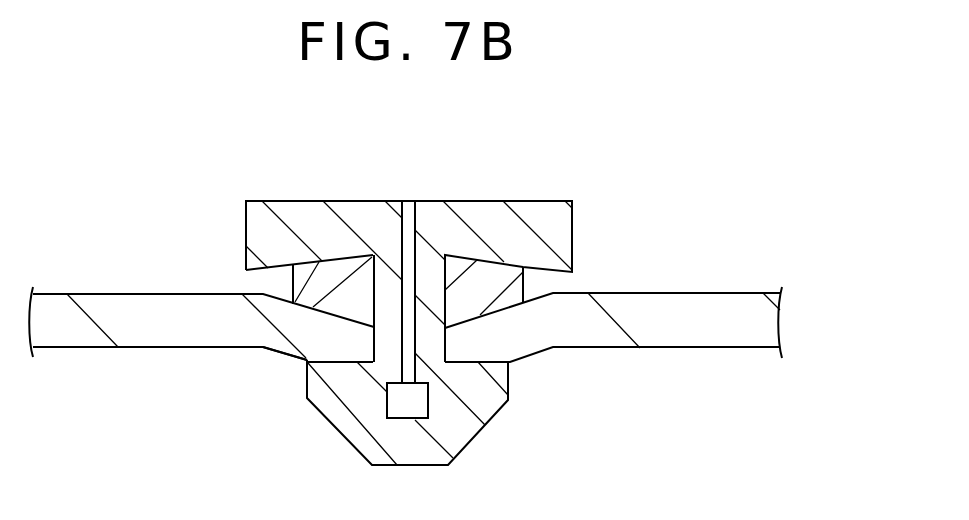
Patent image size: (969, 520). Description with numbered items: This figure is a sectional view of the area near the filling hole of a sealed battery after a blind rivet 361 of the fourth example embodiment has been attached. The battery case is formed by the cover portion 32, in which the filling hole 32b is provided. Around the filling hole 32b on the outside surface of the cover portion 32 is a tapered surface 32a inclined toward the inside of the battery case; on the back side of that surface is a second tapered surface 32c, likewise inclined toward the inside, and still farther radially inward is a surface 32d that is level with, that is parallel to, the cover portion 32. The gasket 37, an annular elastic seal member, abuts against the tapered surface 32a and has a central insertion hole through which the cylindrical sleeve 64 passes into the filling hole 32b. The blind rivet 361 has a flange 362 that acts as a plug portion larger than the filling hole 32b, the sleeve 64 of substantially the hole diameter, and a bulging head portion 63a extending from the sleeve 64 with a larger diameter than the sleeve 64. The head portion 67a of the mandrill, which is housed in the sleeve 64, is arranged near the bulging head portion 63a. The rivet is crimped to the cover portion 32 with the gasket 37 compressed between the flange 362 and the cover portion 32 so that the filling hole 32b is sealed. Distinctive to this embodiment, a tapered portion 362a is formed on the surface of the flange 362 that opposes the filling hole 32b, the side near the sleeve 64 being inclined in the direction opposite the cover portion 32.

The blind rivet 361 is at (230, 142).
The flange 362 is at (497, 228).
The tapered portion 362a is at (552, 273).
The sleeve 64 is at (355, 303).
The head portion 67a is at (402, 402).
The cover portion 32 is at (202, 327).
The tapered surface 32a is at (272, 291).
The filling hole 32b is at (375, 378).
The tapered surface 32c is at (303, 353).
The surface 32d is at (372, 360).
The gasket 37 is at (507, 303).
The bulging head portion 63a is at (468, 382).